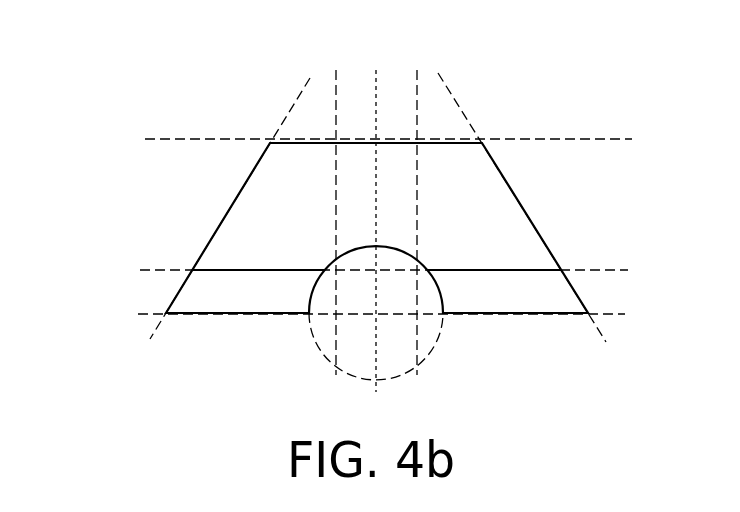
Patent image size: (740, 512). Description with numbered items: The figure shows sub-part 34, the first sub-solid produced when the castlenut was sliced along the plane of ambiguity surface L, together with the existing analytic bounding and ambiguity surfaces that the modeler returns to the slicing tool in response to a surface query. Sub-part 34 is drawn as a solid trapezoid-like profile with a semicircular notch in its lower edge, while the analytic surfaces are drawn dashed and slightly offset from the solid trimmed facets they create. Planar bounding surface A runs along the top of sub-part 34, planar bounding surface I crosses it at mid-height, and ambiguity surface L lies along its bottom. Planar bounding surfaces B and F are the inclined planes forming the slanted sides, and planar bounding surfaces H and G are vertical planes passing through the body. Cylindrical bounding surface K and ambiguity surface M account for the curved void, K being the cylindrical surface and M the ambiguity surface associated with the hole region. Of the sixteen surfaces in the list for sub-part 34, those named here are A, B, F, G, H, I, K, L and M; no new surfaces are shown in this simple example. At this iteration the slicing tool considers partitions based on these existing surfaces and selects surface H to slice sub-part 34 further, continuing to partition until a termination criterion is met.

The sub-part 34 is at (145, 191).
The planar bounding surface A is at (376, 139).
The planar bounding surface I is at (370, 270).
The ambiguity surface L is at (366, 317).
The planar bounding surface H is at (335, 209).
The planar bounding surface G is at (412, 209).
The planar bounding surface B is at (215, 219).
The planar bounding surface F is at (541, 222).
The cylindrical bounding surface K is at (367, 346).
The ambiguity surface M is at (375, 244).